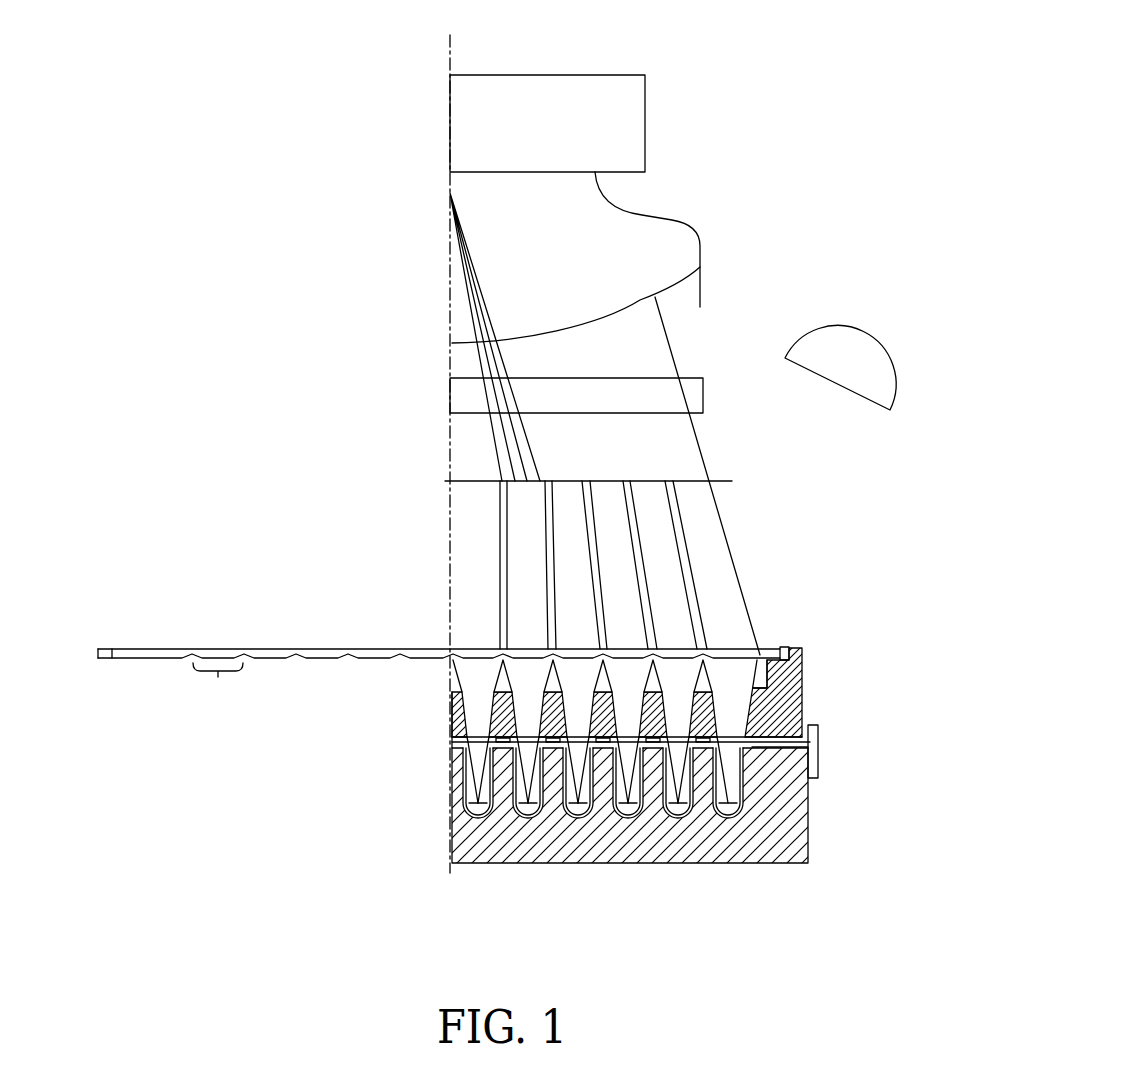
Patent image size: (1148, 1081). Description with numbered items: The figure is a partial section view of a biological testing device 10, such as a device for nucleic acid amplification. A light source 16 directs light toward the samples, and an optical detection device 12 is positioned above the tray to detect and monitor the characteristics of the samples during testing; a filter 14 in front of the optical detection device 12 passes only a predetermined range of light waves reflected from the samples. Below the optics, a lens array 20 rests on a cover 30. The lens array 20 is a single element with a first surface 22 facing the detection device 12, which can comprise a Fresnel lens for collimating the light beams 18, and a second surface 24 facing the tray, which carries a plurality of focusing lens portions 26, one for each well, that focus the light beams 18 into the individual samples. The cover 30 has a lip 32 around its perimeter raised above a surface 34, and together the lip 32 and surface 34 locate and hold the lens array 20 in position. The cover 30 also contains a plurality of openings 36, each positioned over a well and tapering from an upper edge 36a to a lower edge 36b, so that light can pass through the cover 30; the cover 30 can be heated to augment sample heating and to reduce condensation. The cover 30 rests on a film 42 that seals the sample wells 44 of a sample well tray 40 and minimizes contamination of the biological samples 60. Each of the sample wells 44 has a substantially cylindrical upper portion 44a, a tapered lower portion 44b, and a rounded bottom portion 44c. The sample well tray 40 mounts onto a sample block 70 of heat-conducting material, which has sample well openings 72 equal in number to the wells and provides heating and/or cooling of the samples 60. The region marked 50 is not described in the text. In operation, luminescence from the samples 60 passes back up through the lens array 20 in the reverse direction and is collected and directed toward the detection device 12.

The biological testing device 10 is at (769, 80).
The optical detection device 12 is at (572, 254).
The filter 14 is at (697, 387).
The light source 16 is at (873, 360).
The light beams 18 is at (730, 552).
The lens array 20 is at (86, 648).
The first surface 22 is at (115, 648).
The second surface 24 is at (108, 660).
The focusing lens portions 26 is at (218, 688).
The cover 30 is at (790, 697).
The lip 32 is at (800, 649).
The surface 34 is at (778, 652).
The openings 36 is at (733, 675).
The upper edge 36a is at (467, 673).
The lower edge 36b is at (475, 744).
The sample well tray 40 is at (813, 742).
The film 42 is at (472, 740).
The sample wells 44 is at (748, 787).
The upper portion 44a is at (452, 783).
The tapered lower portion 44b is at (455, 805).
The rounded bottom portion 44c is at (478, 822).
The right block portion 50 is at (752, 795).
The biological samples 60 is at (722, 822).
The sample block 70 is at (810, 842).
The sample well openings 72 is at (590, 822).